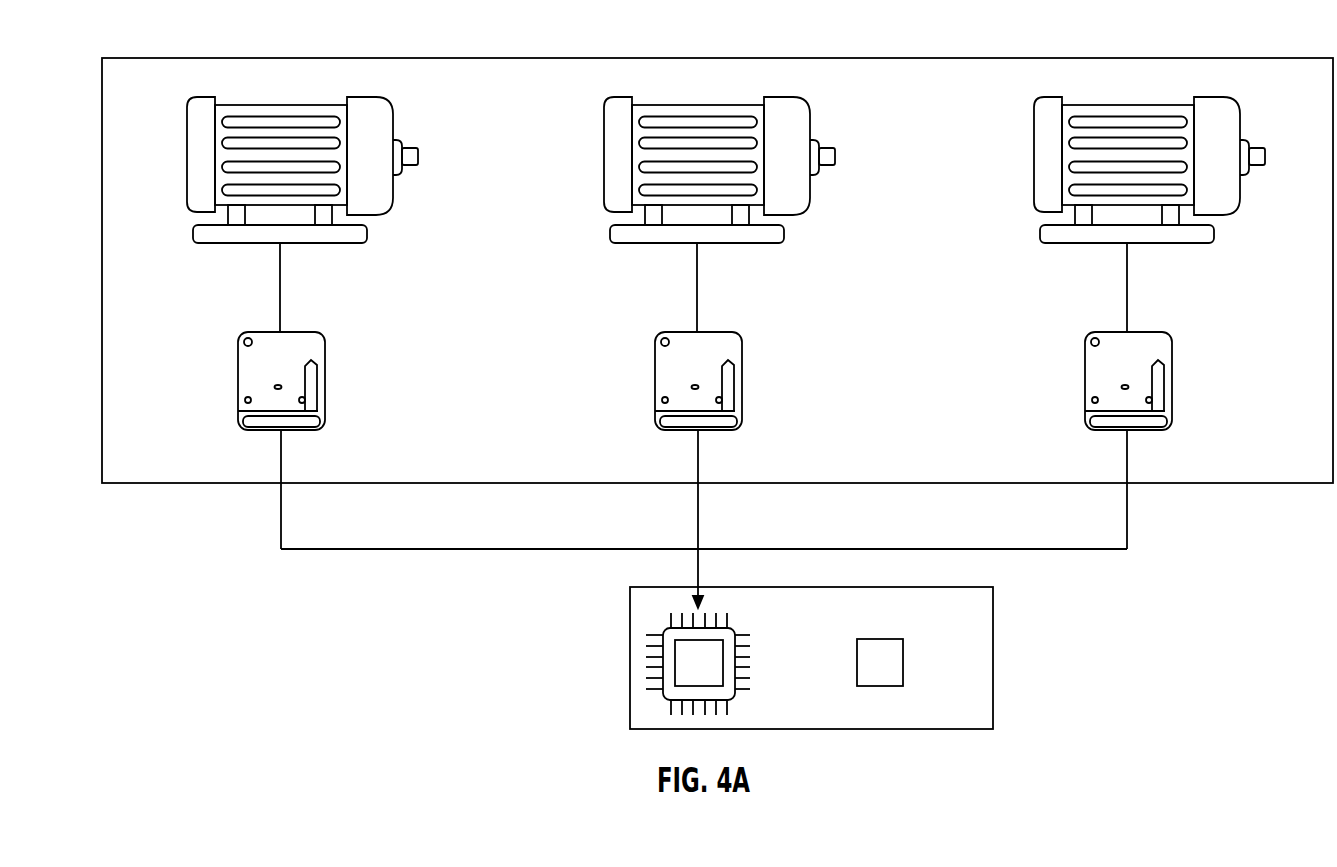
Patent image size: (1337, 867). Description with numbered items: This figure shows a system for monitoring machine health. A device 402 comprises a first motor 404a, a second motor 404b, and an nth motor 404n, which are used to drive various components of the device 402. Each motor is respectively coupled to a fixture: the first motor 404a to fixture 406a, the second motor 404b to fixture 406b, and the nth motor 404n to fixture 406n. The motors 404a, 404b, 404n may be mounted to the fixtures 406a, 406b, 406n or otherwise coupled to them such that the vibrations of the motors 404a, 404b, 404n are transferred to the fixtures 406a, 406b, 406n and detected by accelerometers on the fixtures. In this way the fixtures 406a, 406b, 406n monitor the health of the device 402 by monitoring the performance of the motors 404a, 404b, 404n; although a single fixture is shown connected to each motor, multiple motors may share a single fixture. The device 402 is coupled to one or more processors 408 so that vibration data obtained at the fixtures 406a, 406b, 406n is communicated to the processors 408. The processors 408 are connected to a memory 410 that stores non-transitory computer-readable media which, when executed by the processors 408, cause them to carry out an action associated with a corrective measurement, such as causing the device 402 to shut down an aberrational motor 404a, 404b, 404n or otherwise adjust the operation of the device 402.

The device 402 is at (168, 58).
The first motor 404a is at (394, 111).
The second motor 404b is at (811, 111).
The nth motor 404n is at (1241, 111).
The fixture 406a is at (321, 334).
The fixture 406b is at (738, 334).
The fixture 406n is at (1168, 334).
The processors 408 is at (742, 658).
The memory 410 is at (904, 655).